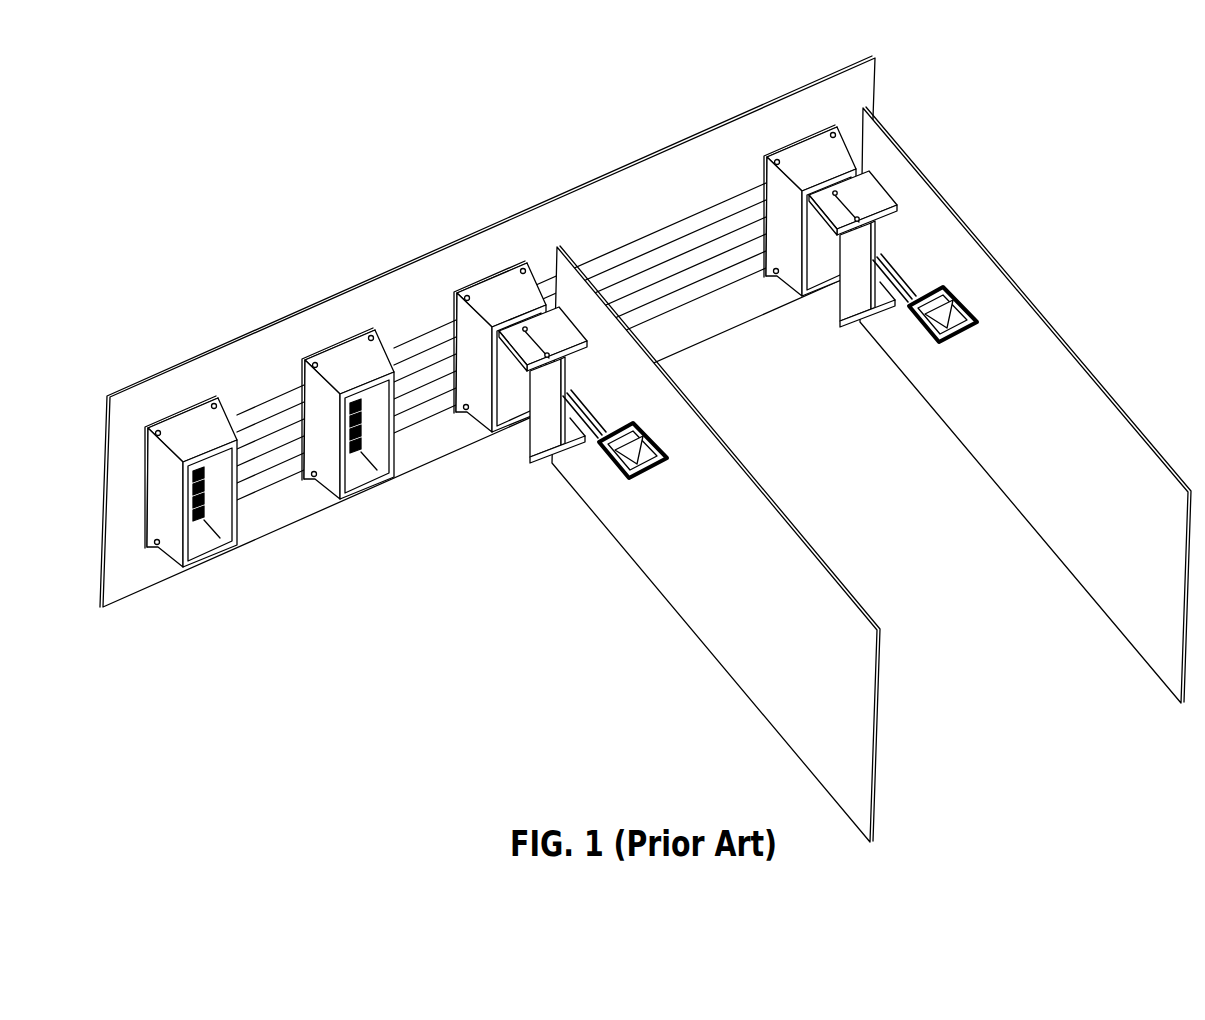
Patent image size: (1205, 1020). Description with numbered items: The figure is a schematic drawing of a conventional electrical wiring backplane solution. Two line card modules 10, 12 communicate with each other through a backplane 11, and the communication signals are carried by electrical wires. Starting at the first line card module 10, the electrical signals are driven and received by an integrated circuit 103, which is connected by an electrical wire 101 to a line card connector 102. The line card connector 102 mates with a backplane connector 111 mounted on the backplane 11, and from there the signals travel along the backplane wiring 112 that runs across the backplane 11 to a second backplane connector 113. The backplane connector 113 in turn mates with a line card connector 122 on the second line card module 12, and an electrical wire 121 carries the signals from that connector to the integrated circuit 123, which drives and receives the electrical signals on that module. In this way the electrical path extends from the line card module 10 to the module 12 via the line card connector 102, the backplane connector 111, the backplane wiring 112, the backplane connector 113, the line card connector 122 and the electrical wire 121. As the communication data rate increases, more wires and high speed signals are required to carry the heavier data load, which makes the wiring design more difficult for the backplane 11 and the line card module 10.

The line card module 10 is at (1105, 417).
The backplane 11 is at (567, 198).
The line card module 12 is at (800, 572).
The electrical wire 101 is at (913, 275).
The line card connector 102 is at (893, 188).
The integrated circuit 103 is at (918, 333).
The backplane connector 111 is at (795, 145).
The backplane wiring 112 is at (723, 190).
The backplane connector 113 is at (470, 287).
The electrical wire 121 is at (605, 405).
The line card connector 122 is at (515, 458).
The integrated circuit 123 is at (620, 478).